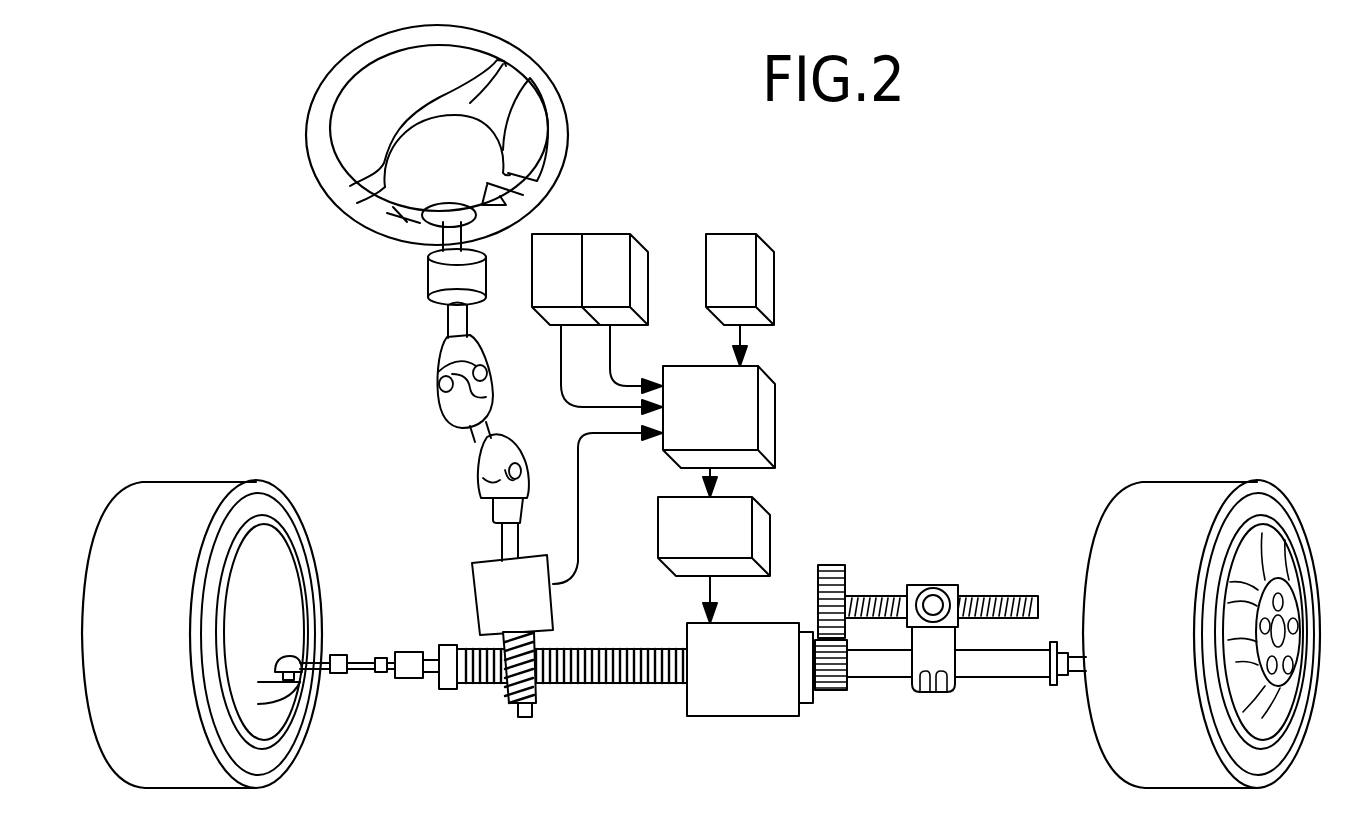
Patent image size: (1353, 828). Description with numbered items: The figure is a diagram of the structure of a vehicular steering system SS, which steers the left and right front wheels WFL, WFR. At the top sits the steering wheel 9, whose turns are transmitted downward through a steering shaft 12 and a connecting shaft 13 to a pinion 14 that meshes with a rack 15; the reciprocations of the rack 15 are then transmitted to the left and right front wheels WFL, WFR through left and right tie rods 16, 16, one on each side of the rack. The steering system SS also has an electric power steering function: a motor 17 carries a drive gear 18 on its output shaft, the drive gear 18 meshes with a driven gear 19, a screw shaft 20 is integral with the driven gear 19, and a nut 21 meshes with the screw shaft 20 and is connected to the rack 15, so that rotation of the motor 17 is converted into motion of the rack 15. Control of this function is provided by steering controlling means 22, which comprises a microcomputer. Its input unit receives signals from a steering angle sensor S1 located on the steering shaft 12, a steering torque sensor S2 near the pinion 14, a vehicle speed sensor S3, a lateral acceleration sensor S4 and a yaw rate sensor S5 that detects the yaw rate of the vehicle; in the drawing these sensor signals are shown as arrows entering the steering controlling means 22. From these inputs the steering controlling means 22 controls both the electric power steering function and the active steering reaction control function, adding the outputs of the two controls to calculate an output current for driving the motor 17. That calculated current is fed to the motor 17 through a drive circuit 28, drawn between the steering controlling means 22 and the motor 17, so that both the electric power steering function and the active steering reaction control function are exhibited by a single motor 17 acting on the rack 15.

The steering wheel 9 is at (556, 101).
The steering angle sensor S1 is at (436, 272).
The steering shaft 12 is at (452, 317).
The connecting shaft 13 is at (478, 431).
The steering torque sensor S2 is at (535, 608).
The vehicle speed sensor S3 is at (737, 245).
The lateral acceleration sensor S4 is at (563, 245).
The yaw rate sensor S5 is at (617, 245).
The steering controlling means 22 is at (770, 405).
The drive circuit 28 is at (753, 520).
The motor 17 is at (733, 698).
The pinion 14 is at (512, 697).
The rack 15 is at (614, 672).
The tie rod 16 is at (360, 672).
The drive gear 18 is at (835, 685).
The driven gear 19 is at (831, 572).
The screw shaft 20 is at (1005, 597).
The nut 21 is at (917, 590).
The right front wheel WFR is at (192, 487).
The left front wheel WFL is at (1187, 490).
The steering system SS is at (895, 431).